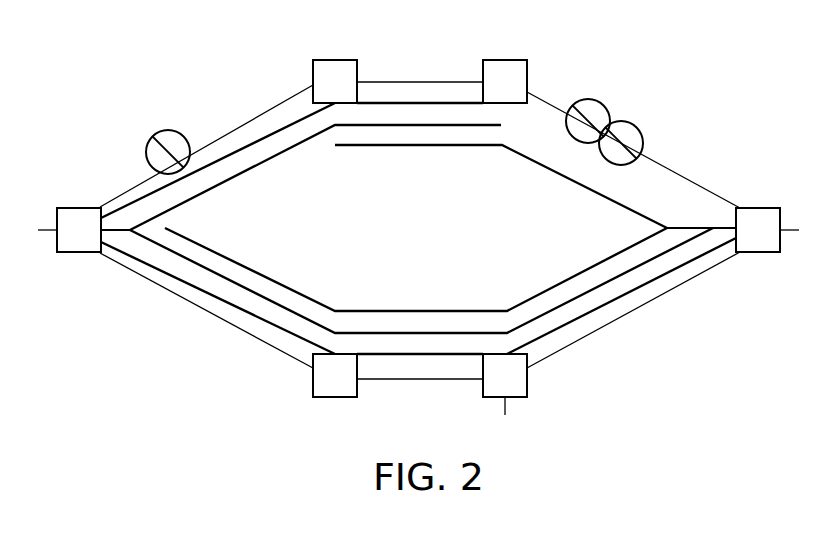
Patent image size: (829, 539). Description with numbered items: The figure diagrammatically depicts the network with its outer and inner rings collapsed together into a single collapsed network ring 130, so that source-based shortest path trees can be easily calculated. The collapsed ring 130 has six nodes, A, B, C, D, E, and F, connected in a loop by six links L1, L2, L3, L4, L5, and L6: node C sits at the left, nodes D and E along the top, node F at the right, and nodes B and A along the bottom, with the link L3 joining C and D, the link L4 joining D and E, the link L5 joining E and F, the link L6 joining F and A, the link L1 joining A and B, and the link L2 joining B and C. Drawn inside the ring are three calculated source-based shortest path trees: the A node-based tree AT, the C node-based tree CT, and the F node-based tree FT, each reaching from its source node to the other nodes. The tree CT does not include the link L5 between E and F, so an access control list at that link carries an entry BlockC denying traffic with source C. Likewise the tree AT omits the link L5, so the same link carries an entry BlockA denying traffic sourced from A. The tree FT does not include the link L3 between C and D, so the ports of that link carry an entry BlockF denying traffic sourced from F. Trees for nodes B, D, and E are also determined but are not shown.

The collapsed network ring 130 is at (551, 72).
The link L1 is at (422, 381).
The link L2 is at (208, 317).
The link L3 is at (275, 103).
The link L4 is at (457, 82).
The link L5 is at (697, 176).
The link L6 is at (694, 284).
The A node-based shortest path tree AT is at (417, 82).
The C node-based shortest path tree CT is at (252, 172).
The F node-based shortest path tree FT is at (597, 196).
The block of F-sourced traffic BlockF is at (182, 140).
The block of A-sourced traffic BlockA is at (618, 110).
The block of C-sourced traffic BlockC is at (658, 139).